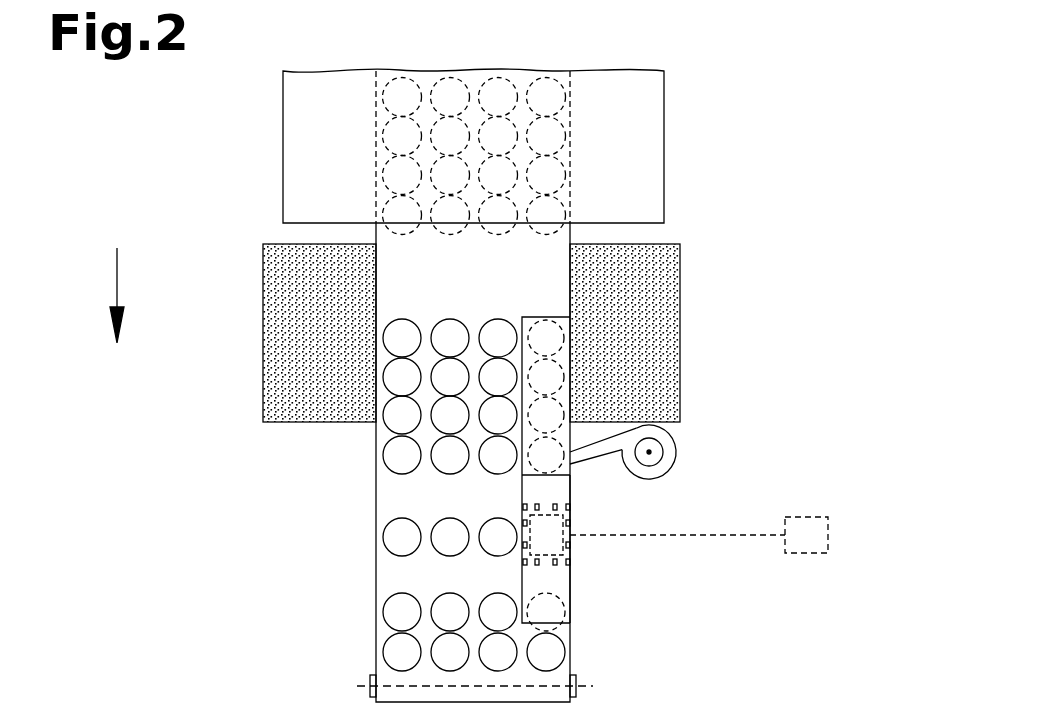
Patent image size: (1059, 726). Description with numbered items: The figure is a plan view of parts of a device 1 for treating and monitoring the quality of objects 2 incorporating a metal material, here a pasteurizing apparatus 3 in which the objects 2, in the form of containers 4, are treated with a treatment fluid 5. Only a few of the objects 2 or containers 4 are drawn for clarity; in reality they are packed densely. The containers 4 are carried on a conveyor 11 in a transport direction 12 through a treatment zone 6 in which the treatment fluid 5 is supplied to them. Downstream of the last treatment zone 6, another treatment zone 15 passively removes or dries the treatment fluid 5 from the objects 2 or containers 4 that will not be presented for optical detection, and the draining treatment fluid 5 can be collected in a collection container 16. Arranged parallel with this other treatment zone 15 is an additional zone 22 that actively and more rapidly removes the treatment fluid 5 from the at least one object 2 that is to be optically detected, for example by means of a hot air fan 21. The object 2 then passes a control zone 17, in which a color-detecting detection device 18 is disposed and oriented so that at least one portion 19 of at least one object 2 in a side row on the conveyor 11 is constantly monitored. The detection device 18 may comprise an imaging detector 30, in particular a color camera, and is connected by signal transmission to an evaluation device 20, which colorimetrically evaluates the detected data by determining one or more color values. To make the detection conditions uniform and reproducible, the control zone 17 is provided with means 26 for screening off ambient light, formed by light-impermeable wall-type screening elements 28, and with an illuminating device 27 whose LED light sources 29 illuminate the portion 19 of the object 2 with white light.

The device 1 is at (808, 105).
The object 2 is at (567, 652).
The pasteurizing apparatus 3 is at (146, 575).
The container 4 is at (571, 612).
The treatment fluid 5 is at (280, 345).
The treatment zone 6 is at (668, 172).
The conveyor means 11 is at (397, 565).
The transport direction 12 is at (114, 283).
The other treatment zone 15 is at (373, 355).
The collection container 16 is at (680, 401).
The control zone 17 is at (578, 577).
The color-detecting detection device 18 is at (551, 578).
The portion 19 is at (554, 464).
The evaluation device 20 is at (813, 554).
The hot air fan 21 is at (687, 456).
The additional zone 22 is at (569, 357).
The means for partitioning off ambient light 26 is at (525, 573).
The illuminating device 27 is at (515, 509).
The screening element 28 is at (525, 583).
The light source 29 is at (522, 505).
The imaging detector 30 is at (553, 545).